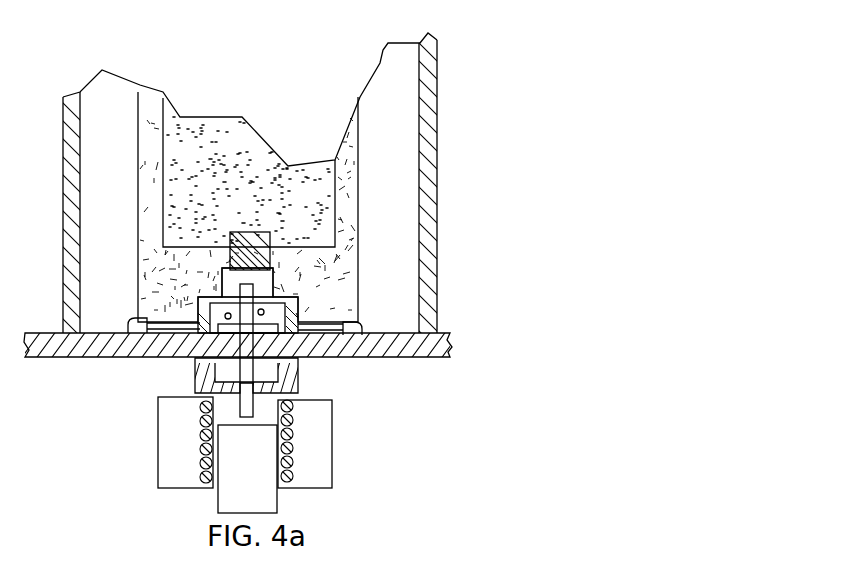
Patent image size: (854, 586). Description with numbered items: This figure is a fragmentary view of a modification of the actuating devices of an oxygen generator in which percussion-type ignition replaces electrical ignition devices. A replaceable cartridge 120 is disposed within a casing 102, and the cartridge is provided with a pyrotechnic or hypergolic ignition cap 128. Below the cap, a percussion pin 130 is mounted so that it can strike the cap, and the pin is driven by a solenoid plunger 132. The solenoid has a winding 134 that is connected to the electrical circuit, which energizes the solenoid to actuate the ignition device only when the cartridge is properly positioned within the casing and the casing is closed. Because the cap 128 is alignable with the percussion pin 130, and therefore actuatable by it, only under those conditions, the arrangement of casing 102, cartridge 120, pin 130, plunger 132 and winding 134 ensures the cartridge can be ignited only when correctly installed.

The casing 102 is at (438, 48).
The replaceable cartridge 120 is at (360, 155).
The pyrotechnic or hypergolic ignition cap 128 is at (253, 244).
The percussion pin 130 is at (243, 342).
The solenoid plunger 132 is at (258, 443).
The winding 134 is at (305, 445).